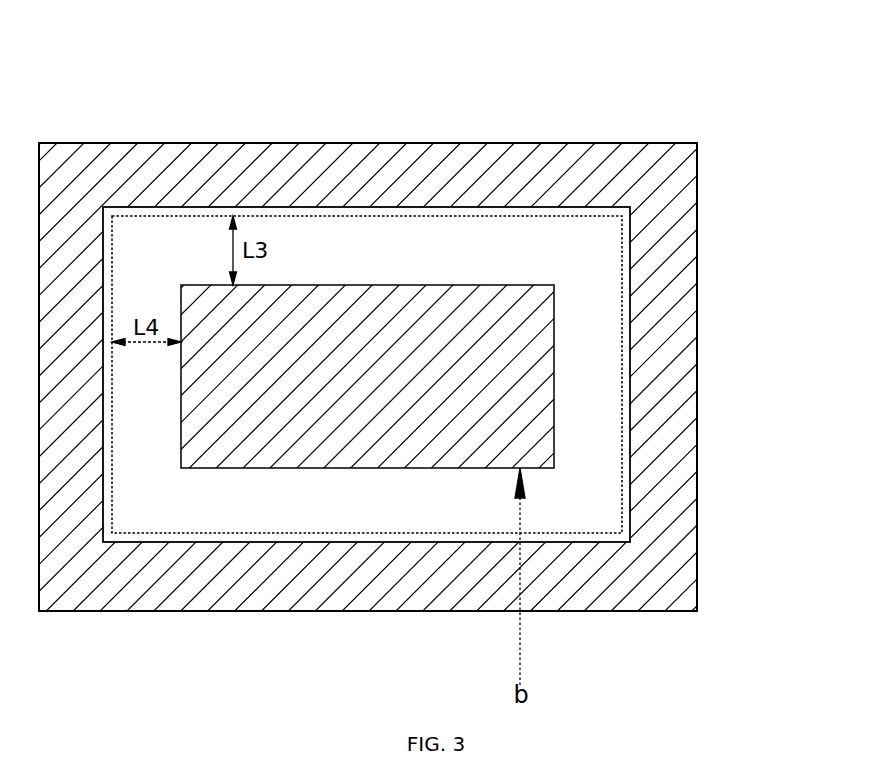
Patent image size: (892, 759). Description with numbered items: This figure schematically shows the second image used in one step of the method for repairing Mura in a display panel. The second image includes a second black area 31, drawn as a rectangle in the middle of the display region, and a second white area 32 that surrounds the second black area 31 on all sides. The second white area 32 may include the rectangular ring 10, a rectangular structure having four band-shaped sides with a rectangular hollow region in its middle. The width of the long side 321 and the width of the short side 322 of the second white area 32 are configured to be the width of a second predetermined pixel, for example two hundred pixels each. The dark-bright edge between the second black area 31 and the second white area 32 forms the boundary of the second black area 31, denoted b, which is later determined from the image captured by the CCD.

The rectangular ring 10 is at (295, 213).
The second black area 31 is at (333, 328).
The second white area 32 is at (603, 250).
The long side 321 is at (502, 250).
The short side 322 is at (603, 426).